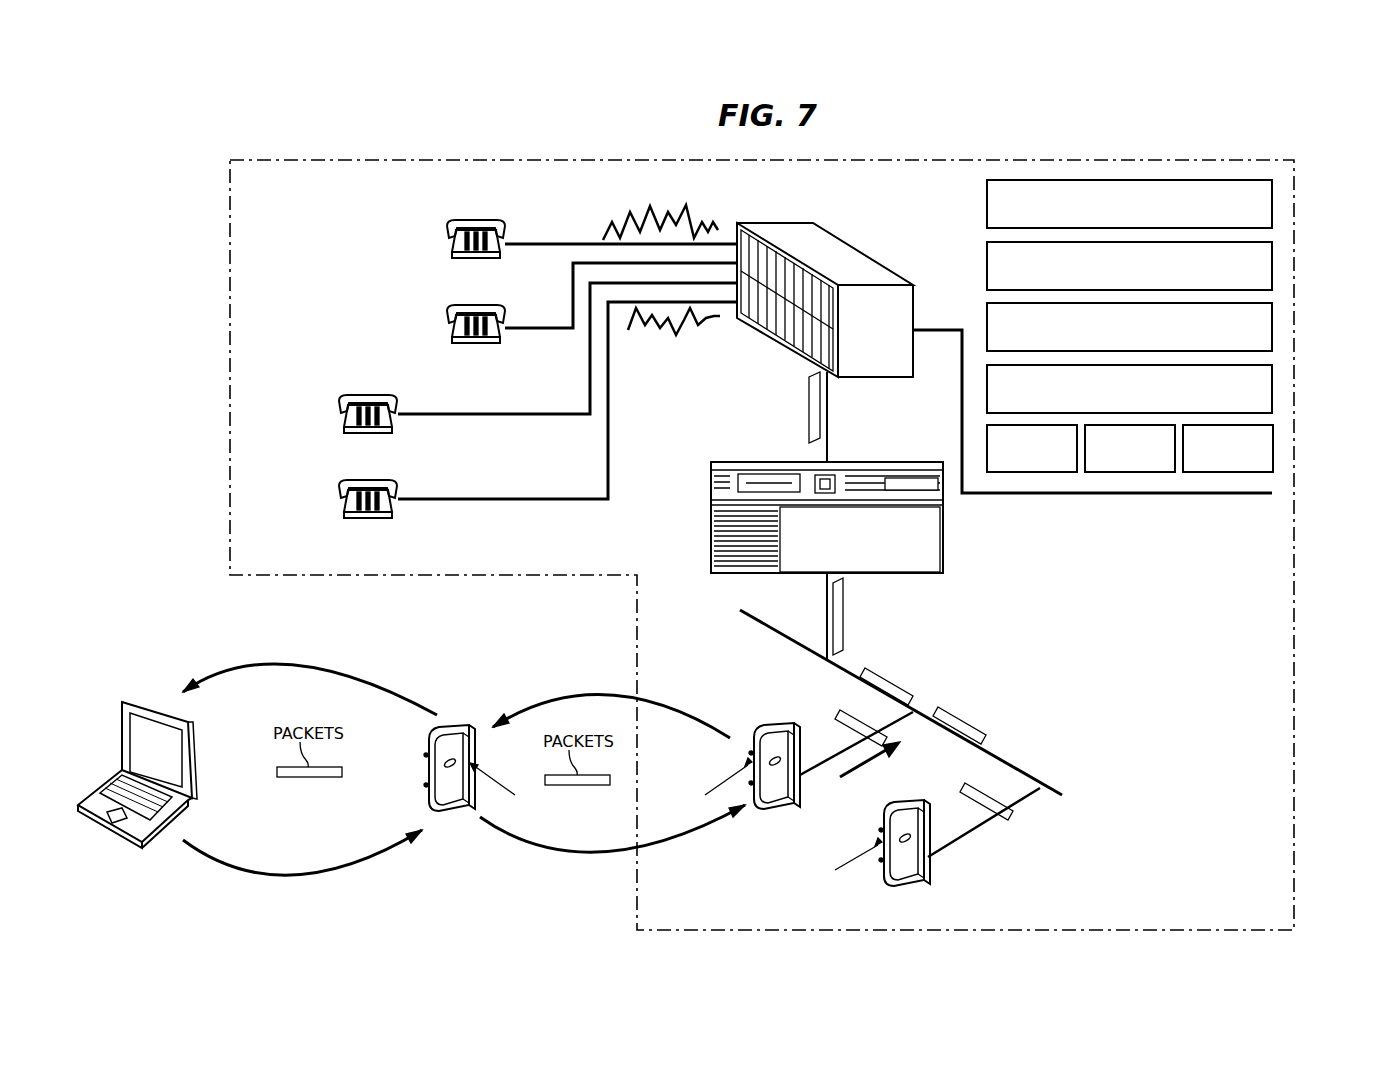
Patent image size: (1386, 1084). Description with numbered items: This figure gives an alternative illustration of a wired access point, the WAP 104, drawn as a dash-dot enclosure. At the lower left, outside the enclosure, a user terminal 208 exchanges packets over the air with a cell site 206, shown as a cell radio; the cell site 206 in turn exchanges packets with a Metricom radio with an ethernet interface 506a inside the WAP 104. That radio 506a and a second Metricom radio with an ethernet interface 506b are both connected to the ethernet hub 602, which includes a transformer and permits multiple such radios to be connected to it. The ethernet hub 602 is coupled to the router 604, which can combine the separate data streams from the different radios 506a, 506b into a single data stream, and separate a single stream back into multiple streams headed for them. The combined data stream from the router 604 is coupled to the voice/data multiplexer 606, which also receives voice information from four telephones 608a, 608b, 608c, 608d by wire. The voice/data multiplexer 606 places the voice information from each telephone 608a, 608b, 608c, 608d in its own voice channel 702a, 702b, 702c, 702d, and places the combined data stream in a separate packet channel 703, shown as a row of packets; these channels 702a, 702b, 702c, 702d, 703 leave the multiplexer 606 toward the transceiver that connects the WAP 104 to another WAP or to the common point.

The wired access point (WAP) 104 is at (283, 160).
The telephone 608a is at (337, 492).
The telephone 608b is at (337, 407).
The telephone 608c is at (445, 317).
The telephone 608d is at (445, 232).
The voice/data multiplexer 606 is at (890, 378).
The router 604 is at (711, 503).
The ethernet hub 602 is at (760, 623).
The Metricom radio with ethernet interface 506a is at (784, 724).
The Metricom radio with ethernet interface 506b is at (905, 801).
The cell site 206 is at (425, 805).
The user terminal 208 is at (193, 770).
The voice channel 702a is at (1215, 180).
The voice channel 702b is at (1272, 255).
The voice channel 702c is at (1272, 325).
The voice channel 702d is at (1272, 372).
The packet channel 703 is at (1223, 472).